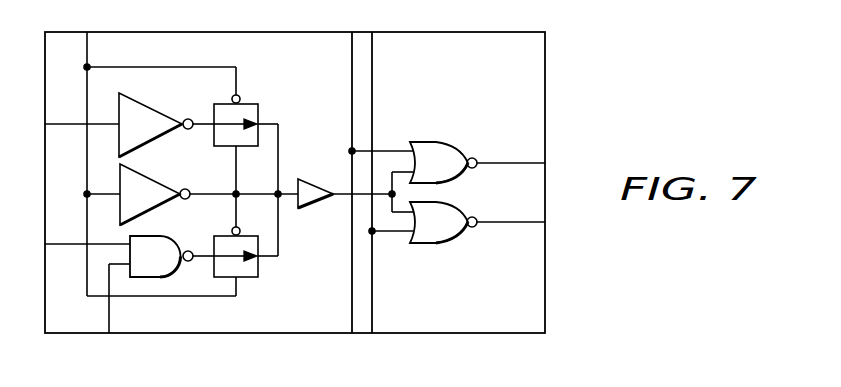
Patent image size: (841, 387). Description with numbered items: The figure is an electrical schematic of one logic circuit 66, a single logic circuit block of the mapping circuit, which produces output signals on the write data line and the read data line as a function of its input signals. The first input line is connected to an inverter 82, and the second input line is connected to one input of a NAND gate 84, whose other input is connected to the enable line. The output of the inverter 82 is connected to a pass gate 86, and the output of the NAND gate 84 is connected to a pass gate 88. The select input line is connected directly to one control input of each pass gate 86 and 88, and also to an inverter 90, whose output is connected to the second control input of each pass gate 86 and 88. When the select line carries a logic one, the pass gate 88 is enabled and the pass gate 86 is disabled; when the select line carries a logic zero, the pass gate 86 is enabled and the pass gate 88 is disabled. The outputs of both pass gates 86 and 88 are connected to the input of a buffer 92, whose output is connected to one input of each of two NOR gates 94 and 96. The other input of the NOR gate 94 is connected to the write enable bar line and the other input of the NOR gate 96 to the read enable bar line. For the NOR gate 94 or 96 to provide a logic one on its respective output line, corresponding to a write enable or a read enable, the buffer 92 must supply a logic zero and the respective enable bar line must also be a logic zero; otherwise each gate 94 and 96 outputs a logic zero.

The logic circuit 66 is at (570, 60).
The inverter 82 is at (174, 117).
The NAND gate 84 is at (176, 241).
The pass gate 86 is at (259, 110).
The pass gate 88 is at (259, 267).
The inverter 90 is at (172, 186).
The buffer 92 is at (313, 179).
The NOR gate 94 is at (430, 141).
The NOR gate 96 is at (430, 245).